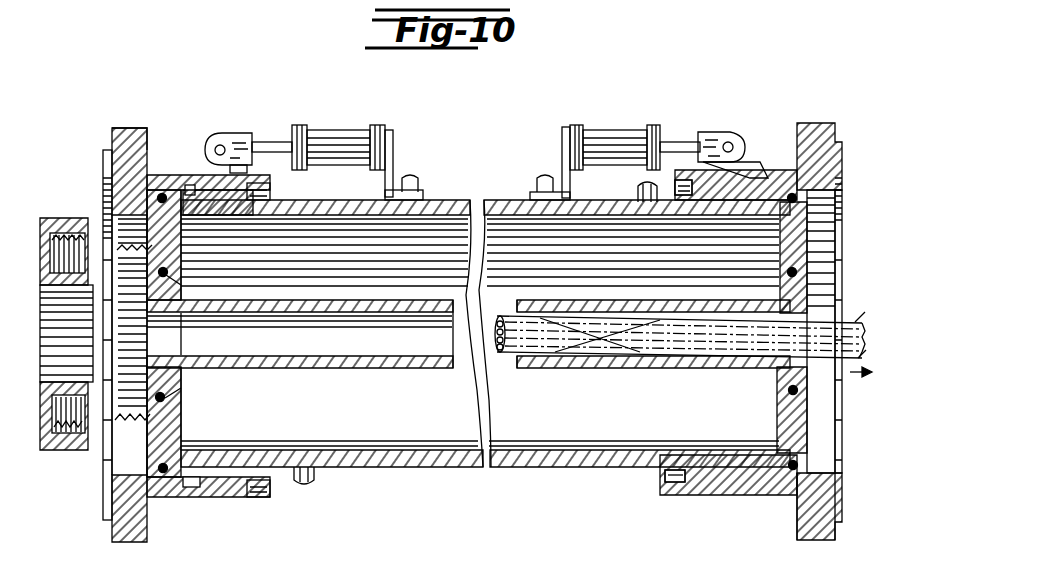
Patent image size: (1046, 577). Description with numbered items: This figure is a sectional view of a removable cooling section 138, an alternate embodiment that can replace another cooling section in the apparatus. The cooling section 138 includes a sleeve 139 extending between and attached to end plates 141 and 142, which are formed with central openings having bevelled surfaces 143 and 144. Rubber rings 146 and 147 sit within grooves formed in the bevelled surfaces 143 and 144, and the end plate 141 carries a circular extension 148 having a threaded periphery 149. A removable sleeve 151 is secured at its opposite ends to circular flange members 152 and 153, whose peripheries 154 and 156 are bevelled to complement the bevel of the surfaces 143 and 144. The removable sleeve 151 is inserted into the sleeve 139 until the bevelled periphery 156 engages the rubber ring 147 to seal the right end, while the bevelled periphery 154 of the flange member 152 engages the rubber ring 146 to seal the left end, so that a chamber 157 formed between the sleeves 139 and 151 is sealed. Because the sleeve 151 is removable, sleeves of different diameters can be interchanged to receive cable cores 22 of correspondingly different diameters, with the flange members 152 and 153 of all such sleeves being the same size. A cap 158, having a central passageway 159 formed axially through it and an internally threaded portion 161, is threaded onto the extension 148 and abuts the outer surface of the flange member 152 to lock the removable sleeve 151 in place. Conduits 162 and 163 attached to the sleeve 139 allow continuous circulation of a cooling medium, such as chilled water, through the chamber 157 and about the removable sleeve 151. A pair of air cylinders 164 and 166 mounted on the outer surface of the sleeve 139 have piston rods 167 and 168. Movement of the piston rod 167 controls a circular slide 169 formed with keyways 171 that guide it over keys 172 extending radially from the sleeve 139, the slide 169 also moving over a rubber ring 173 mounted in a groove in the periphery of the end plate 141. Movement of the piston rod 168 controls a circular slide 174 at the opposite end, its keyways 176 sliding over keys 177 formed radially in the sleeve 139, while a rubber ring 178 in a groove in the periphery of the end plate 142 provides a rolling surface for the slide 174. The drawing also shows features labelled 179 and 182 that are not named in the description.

The cable core 22 is at (504, 362).
The cooling section 138 is at (516, 474).
The sleeve 139 is at (500, 200).
The end plate 141 is at (103, 195).
The end plate 142 is at (758, 432).
The bevelled surface 143 is at (170, 320).
The bevelled surface 144 is at (775, 283).
The rubber ring 146 is at (178, 405).
The rubber ring 147 is at (782, 408).
The circular extension 148 is at (133, 337).
The threaded periphery 149 is at (180, 430).
The removable sleeve 151 is at (338, 366).
The flange member 152 is at (150, 382).
The flange member 153 is at (785, 378).
The bevelled periphery 154 is at (168, 398).
The bevelled periphery 156 is at (842, 265).
The chamber 157 is at (435, 245).
The cap 158 is at (40, 255).
The central passageway 159 is at (38, 410).
The internally threaded portion 161 is at (62, 432).
The conduit 162 is at (636, 192).
The conduit 163 is at (316, 480).
The air cylinder 164 is at (345, 140).
The air cylinder 166 is at (620, 140).
The piston rod 167 is at (270, 148).
The piston rod 168 is at (690, 140).
The circular slide 169 is at (148, 140).
The keyway 171 is at (272, 192).
The key 172 is at (210, 185).
The rubber ring 173 is at (180, 487).
The circular slide 174 is at (808, 125).
The keyway 176 is at (770, 185).
The key 177 is at (740, 185).
The rubber ring 178 is at (792, 497).
The left flange 179 is at (112, 150).
The plate 182 is at (103, 160).